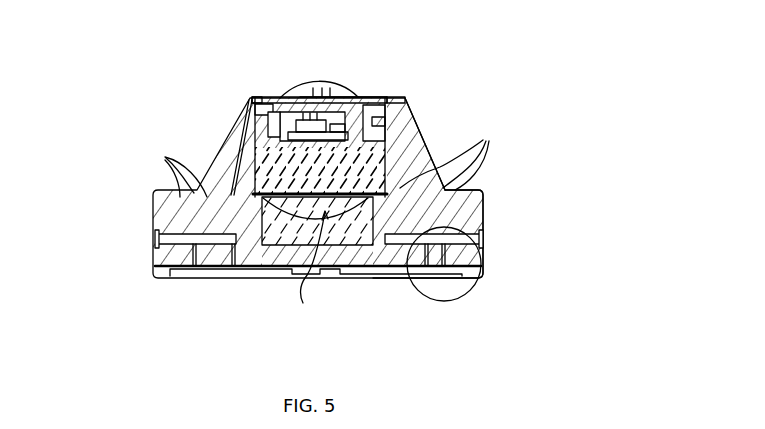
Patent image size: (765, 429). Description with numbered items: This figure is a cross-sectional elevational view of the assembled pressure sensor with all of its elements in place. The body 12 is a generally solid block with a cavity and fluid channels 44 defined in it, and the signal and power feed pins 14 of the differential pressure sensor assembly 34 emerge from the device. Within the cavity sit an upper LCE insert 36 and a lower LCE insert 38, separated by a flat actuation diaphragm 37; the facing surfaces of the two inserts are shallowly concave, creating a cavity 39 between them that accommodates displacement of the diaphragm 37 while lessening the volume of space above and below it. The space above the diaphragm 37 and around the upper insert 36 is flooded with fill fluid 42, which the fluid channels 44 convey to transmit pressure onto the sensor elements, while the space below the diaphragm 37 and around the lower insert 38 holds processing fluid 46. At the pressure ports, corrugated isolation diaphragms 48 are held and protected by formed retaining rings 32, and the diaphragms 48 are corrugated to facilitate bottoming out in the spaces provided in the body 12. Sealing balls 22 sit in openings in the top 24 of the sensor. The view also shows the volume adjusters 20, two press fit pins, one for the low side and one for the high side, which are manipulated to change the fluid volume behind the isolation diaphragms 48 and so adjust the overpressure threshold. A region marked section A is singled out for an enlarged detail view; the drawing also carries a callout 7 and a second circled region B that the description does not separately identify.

The upper LCE insert 36 is at (240, 167).
The sealing balls 22 is at (243, 97).
The top plate 7 is at (265, 99).
The signal and power feed pins 14 is at (348, 100).
The differential pressure sensor assembly 34 is at (357, 97).
The top 24 is at (382, 98).
The flat actuation diaphragm 37 is at (413, 123).
The body 12 is at (482, 189).
The fluid channels 44 is at (319, 160).
The fill fluid 42 is at (263, 152).
The volume adjusters 20 is at (156, 243).
The formed retaining ring 32 is at (222, 272).
The isolation diaphragms 48 is at (241, 270).
The lower LCE insert 38 is at (291, 246).
The cavity 39 is at (379, 232).
The processing fluid 46 is at (318, 261).
The section A is at (407, 100).
The detail B is at (465, 288).